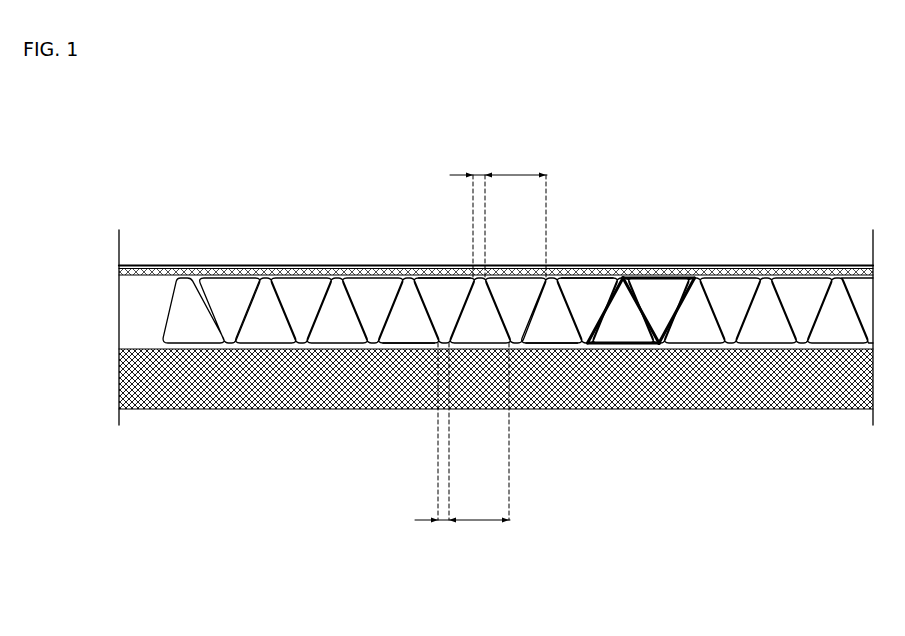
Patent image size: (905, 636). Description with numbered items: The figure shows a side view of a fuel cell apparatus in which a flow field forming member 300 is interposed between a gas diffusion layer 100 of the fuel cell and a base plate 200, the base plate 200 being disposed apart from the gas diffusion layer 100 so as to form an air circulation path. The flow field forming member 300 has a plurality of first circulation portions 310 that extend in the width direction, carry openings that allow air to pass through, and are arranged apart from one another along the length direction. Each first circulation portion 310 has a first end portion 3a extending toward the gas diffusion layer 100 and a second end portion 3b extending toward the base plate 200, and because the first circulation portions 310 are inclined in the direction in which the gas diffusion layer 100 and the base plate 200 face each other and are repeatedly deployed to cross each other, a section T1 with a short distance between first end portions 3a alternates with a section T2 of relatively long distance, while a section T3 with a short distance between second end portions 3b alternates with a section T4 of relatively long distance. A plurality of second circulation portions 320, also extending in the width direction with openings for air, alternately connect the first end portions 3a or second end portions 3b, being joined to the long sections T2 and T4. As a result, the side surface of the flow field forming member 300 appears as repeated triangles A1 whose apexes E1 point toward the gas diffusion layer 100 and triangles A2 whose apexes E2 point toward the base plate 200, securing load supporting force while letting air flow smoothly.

The gas diffusion layer 100 is at (738, 411).
The base plate 200 is at (718, 265).
The flow field forming member 300 is at (184, 290).
The first circulation portions 310 is at (248, 303).
The second circulation portions 320 is at (310, 278).
The first end portion 3a is at (412, 348).
The second end portion 3b is at (438, 278).
The triangles A1 is at (670, 277).
The triangles A2 is at (637, 349).
The apexes E1 is at (658, 346).
The apexes E2 is at (624, 277).
The section T1 is at (447, 522).
The section T2 is at (487, 445).
The section T3 is at (478, 172).
The section T4 is at (524, 214).